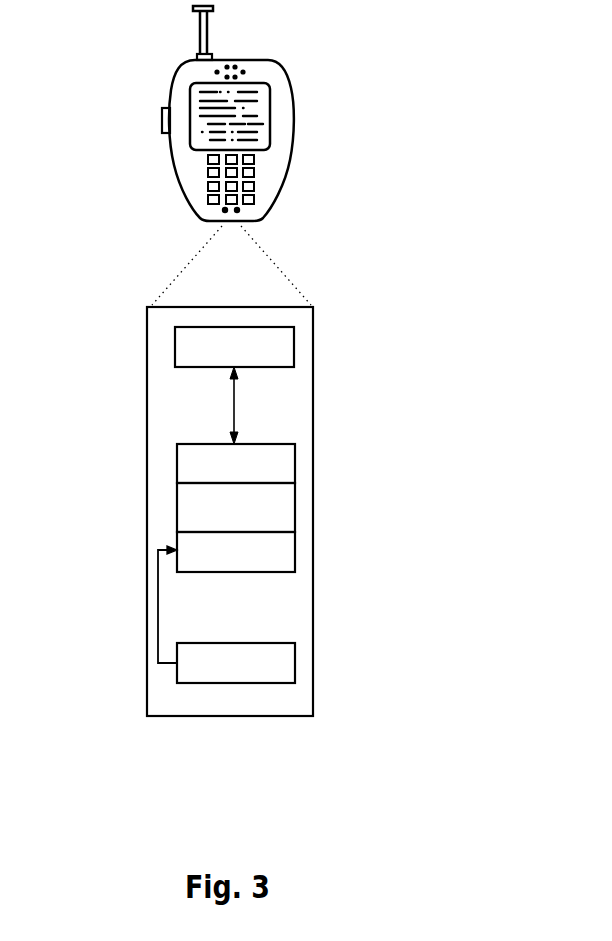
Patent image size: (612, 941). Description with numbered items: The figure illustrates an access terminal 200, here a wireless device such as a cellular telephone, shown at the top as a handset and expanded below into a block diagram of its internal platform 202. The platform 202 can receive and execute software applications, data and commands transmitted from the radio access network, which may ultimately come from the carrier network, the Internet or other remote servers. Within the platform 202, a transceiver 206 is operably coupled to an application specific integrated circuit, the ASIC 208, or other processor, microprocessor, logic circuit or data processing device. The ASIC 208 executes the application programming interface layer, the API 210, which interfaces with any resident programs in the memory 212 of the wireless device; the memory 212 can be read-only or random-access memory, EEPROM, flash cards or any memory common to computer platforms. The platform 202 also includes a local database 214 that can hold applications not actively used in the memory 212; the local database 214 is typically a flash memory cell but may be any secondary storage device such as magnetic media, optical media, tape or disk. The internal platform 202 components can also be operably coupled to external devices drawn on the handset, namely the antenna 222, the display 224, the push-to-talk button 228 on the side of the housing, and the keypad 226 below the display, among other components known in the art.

The access terminal 200 is at (278, 204).
The platform 202 is at (147, 444).
The transceiver 206 is at (294, 345).
The application specific integrated circuit 208 is at (295, 470).
The application programming interface 210 is at (295, 503).
The memory 212 is at (295, 551).
The local database 214 is at (295, 650).
The antenna 222 is at (208, 17).
The display 224 is at (270, 107).
The keypad 226 is at (254, 172).
The push-to-talk button 228 is at (162, 115).